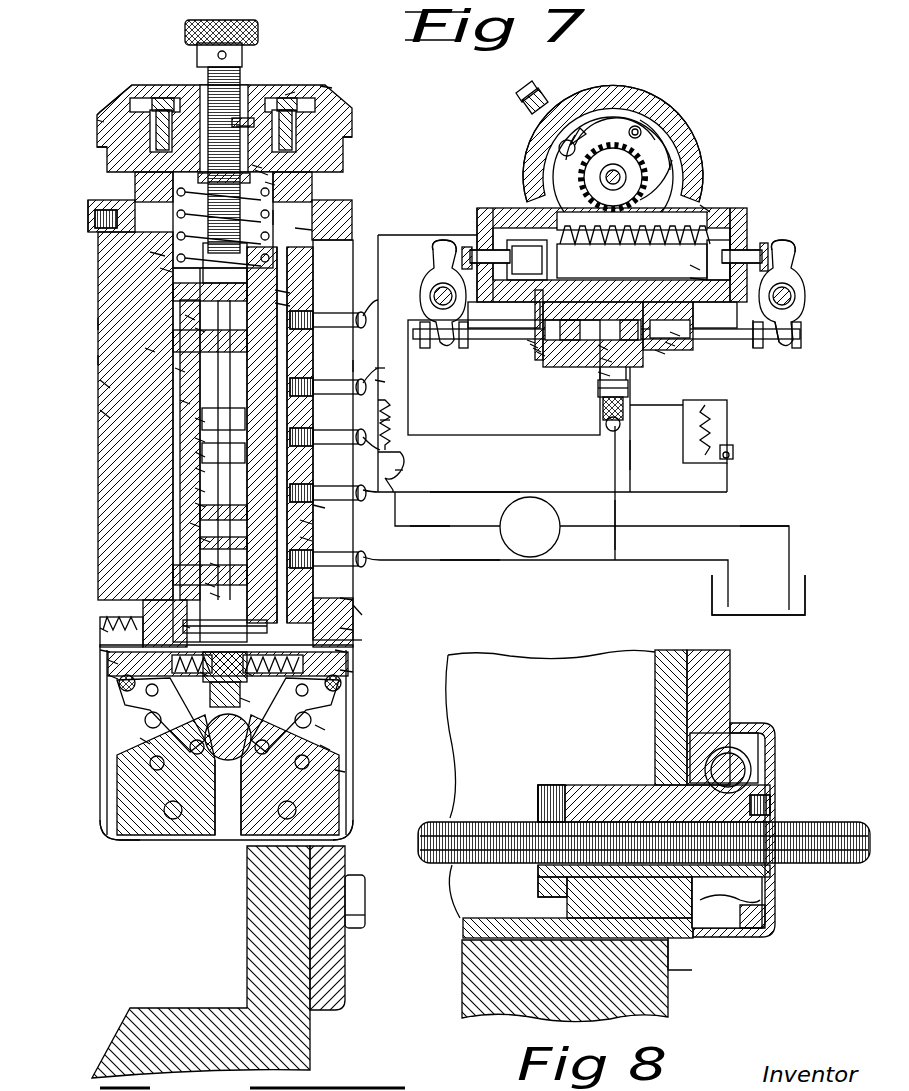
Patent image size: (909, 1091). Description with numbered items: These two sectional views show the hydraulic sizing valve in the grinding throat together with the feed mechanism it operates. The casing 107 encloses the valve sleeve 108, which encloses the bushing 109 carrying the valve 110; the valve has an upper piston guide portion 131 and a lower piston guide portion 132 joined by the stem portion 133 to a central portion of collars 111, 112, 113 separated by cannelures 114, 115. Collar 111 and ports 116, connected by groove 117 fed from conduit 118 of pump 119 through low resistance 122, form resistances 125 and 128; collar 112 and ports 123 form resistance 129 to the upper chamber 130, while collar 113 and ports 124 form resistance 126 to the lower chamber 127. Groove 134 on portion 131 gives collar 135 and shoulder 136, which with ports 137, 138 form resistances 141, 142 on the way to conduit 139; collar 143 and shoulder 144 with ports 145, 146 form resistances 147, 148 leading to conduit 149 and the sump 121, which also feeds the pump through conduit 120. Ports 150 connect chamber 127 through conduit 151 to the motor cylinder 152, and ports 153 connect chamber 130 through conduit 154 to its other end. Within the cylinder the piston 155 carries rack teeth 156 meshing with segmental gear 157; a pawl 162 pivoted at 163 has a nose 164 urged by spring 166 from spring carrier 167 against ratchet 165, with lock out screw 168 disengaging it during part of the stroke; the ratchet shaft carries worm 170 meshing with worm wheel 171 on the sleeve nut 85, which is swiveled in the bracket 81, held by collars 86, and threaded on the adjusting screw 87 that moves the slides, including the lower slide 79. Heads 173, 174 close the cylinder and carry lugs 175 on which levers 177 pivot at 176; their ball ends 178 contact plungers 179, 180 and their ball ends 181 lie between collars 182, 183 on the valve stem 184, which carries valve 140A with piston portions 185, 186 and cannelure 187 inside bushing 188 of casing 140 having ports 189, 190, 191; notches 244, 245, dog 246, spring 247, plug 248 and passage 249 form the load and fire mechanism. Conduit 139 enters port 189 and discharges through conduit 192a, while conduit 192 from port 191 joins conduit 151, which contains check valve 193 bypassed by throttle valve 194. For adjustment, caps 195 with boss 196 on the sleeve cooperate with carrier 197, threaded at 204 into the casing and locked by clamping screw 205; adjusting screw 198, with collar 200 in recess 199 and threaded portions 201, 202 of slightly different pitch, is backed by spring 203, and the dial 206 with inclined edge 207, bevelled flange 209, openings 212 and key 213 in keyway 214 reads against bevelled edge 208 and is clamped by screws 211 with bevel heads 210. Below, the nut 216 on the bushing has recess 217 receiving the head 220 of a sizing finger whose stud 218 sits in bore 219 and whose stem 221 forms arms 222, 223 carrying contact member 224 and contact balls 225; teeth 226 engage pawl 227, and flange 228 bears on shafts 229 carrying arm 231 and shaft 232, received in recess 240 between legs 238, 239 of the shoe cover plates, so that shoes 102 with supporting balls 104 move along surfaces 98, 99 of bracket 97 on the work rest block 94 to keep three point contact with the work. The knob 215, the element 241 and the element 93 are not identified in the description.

In FIG. 7, the knob 215 is at (258, 34).
In FIG. 7, the adjusting screw 198 is at (212, 72).
In FIG. 7, the pin 214 is at (245, 122).
In FIG. 7, the pin 213 is at (248, 124).
In FIG. 7, the cap recess 209 is at (290, 94).
In FIG. 7, the cap chamfer 212 is at (327, 86).
In FIG. 7, the cap screws 210 is at (165, 100).
In FIG. 7, the cap shoulder 211 is at (330, 125).
In FIG. 7, the bore 197 is at (262, 172).
In FIG. 7, the collar 201 is at (258, 168).
In FIG. 7, the flange 200 is at (270, 183).
In FIG. 7, the spring seat 199 is at (250, 182).
In FIG. 7, the cap top 207 is at (118, 88).
In FIG. 7, the cap 206 is at (112, 100).
In FIG. 7, the cap side 208 is at (100, 122).
In FIG. 7, the spring 203 is at (268, 205).
In FIG. 7, the spring chamber wall 202 is at (276, 216).
In FIG. 7, the chamber wall 204 is at (300, 231).
In FIG. 7, the side plate 205 is at (92, 220).
In FIG. 7, the sleeve 196 is at (160, 255).
In FIG. 7, the spring 195 is at (168, 270).
In FIG. 7, the valve body 131 is at (225, 263).
In FIG. 7, the port 136 is at (282, 293).
In FIG. 7, the port 142 is at (282, 305).
In FIG. 7, the passage 109 is at (190, 318).
In FIG. 7, the housing wall 138 is at (100, 323).
In FIG. 7, the bore 135 is at (200, 330).
In FIG. 7, the passage 107 is at (150, 350).
In FIG. 7, the housing 137 is at (100, 360).
In FIG. 7, the passage 108 is at (180, 370).
In FIG. 7, the wall 130 is at (105, 385).
In FIG. 7, the passage 112 is at (185, 402).
In FIG. 7, the wall 123 is at (105, 415).
In FIG. 7, the valve spool land 128 is at (223, 419).
In FIG. 7, the valve spool land 125 is at (223, 453).
In FIG. 7, the passage 114 is at (200, 420).
In FIG. 7, the passage 111 is at (200, 440).
In FIG. 7, the passage 117 is at (200, 455).
In FIG. 7, the passage 115 is at (200, 470).
In FIG. 7, the passage 113 is at (200, 490).
In FIG. 7, the passage 124 is at (200, 505).
In FIG. 7, the passage 150 is at (195, 525).
In FIG. 7, the passage 133 is at (205, 540).
In FIG. 7, the spool stem 127 is at (215, 565).
In FIG. 7, the passage 147 is at (210, 585).
In FIG. 7, the stem 132 is at (215, 595).
In FIG. 7, the pipe fitting 134 is at (314, 345).
In FIG. 7, the pipe fitting 129 is at (314, 365).
In FIG. 7, the port block 153 is at (348, 368).
In FIG. 7, the pipe fitting 116 is at (314, 420).
In FIG. 7, the pipe fitting 126 is at (314, 463).
In FIG. 7, the conduit 141 is at (380, 368).
In FIG. 7, the conduit 154 is at (385, 381).
In FIG. 7, the resistor 241 is at (392, 420).
In FIG. 7, the valve 122 is at (402, 466).
In FIG. 7, the passage 145 is at (318, 506).
In FIG. 7, the passage 143 is at (305, 522).
In FIG. 7, the passage 144 is at (305, 539).
In FIG. 7, the pipe fitting 148 is at (340, 580).
In FIG. 7, the flange 146 is at (345, 599).
In FIG. 7, the flange edge 219 is at (360, 612).
In FIG. 7, the body base 110 is at (345, 630).
In FIG. 7, the housing top 226 is at (362, 641).
In FIG. 7, the plate 216 is at (340, 651).
In FIG. 7, the bar 228 is at (345, 671).
In FIG. 7, the screws 229 is at (342, 686).
In FIG. 7, the pin 238 is at (312, 718).
In FIG. 7, the lever 239 is at (320, 728).
In FIG. 7, the lever 240 is at (325, 748).
In FIG. 7, the wedge 104 is at (340, 771).
In FIG. 7, the wedge blocks 102 is at (335, 788).
In FIG. 7, the pin 231 is at (145, 718).
In FIG. 7, the lever 232 is at (143, 740).
In FIG. 7, the spring 218 is at (102, 630).
In FIG. 7, the housing 227 is at (103, 650).
In FIG. 7, the disc 217 is at (185, 628).
In FIG. 7, the bar 220 is at (112, 662).
In FIG. 7, the bar 221 is at (112, 677).
In FIG. 7, the spring 222 is at (205, 675).
In FIG. 7, the plunger 224 is at (212, 695).
In FIG. 7, the spring 223 is at (248, 675).
In FIG. 7, the plunger end 225 is at (243, 698).
In FIG. 7, the ball 93 is at (232, 840).
In FIG. 7, the housing bottom 98 is at (130, 842).
In FIG. 7, the housing bottom 99 is at (350, 840).
In FIG. 7, the base 94 is at (258, 934).
In FIG. 7, the base side 97 is at (340, 962).
In FIG. 7, the pawl 166 is at (577, 130).
In FIG. 7, the ring 162 is at (612, 125).
In FIG. 7, the pin 163 is at (638, 128).
In FIG. 7, the bolt 168 is at (526, 108).
In FIG. 7, the pin 167 is at (560, 148).
In FIG. 7, the ring 164 is at (655, 167).
In FIG. 7, the gear 157 is at (645, 180).
In FIG. 7, the gear 165 is at (580, 178).
In FIG. 7, the end plate 174 is at (480, 210).
In FIG. 7, the housing 155 is at (705, 208).
In FIG. 7, the gear housing 152 is at (722, 210).
In FIG. 7, the end plate 173 is at (748, 213).
In FIG. 7, the shaft 180 is at (470, 250).
In FIG. 7, the shaft 179 is at (760, 253).
In FIG. 7, the lever end 178 is at (790, 250).
In FIG. 7, the lever 177 is at (440, 257).
In FIG. 7, the pivot 175 is at (432, 284).
In FIG. 7, the pivot pin 176 is at (811, 301).
In FIG. 7, the rack 140A is at (632, 260).
In FIG. 7, the rack teeth 191 is at (635, 246).
In FIG. 7, the rack 156 is at (648, 256).
In FIG. 7, the rack guide 245 is at (685, 278).
In FIG. 7, the block 185 is at (715, 315).
In FIG. 7, the valve 183 is at (530, 341).
In FIG. 7, the valve 184 is at (534, 346).
In FIG. 7, the valve 186 is at (537, 350).
In FIG. 7, the valve 188 is at (541, 354).
In FIG. 7, the valve 140 is at (603, 348).
In FIG. 7, the valve 187 is at (605, 360).
In FIG. 7, the valve 189 is at (603, 374).
In FIG. 7, the nut 190 is at (605, 397).
In FIG. 7, the valve 246 is at (675, 334).
In FIG. 7, the valve 247 is at (670, 344).
In FIG. 7, the valve 249 is at (660, 352).
In FIG. 7, the solenoid 244 is at (625, 395).
In FIG. 7, the solenoid end 248 is at (622, 420).
In FIG. 7, the rod end 182 is at (757, 348).
In FIG. 7, the lever end 181 is at (778, 343).
In FIG. 7, the circuit box 139 is at (504, 377).
In FIG. 7, the switch 194 is at (727, 430).
In FIG. 7, the contact 193 is at (733, 454).
In FIG. 7, the wire 192 is at (631, 455).
In FIG. 7, the wire 151 is at (500, 490).
In FIG. 7, the wire 118 is at (481, 525).
In FIG. 7, the motor 119 is at (558, 522).
In FIG. 7, the wire 192a is at (617, 516).
In FIG. 7, the wire 120 is at (705, 530).
In FIG. 7, the wire 149 is at (490, 562).
In FIG. 7, the battery 121 is at (712, 600).
In FIG. 8, the housing 81 is at (668, 672).
In FIG. 8, the hub 85 is at (608, 800).
In FIG. 8, the nuts 86 is at (540, 795).
In FIG. 8, the shaft 87 is at (815, 825).
In FIG. 8, the bearing 170 is at (752, 770).
In FIG. 8, the cap 171 is at (766, 905).
In FIG. 8, the plate 79 is at (672, 1000).